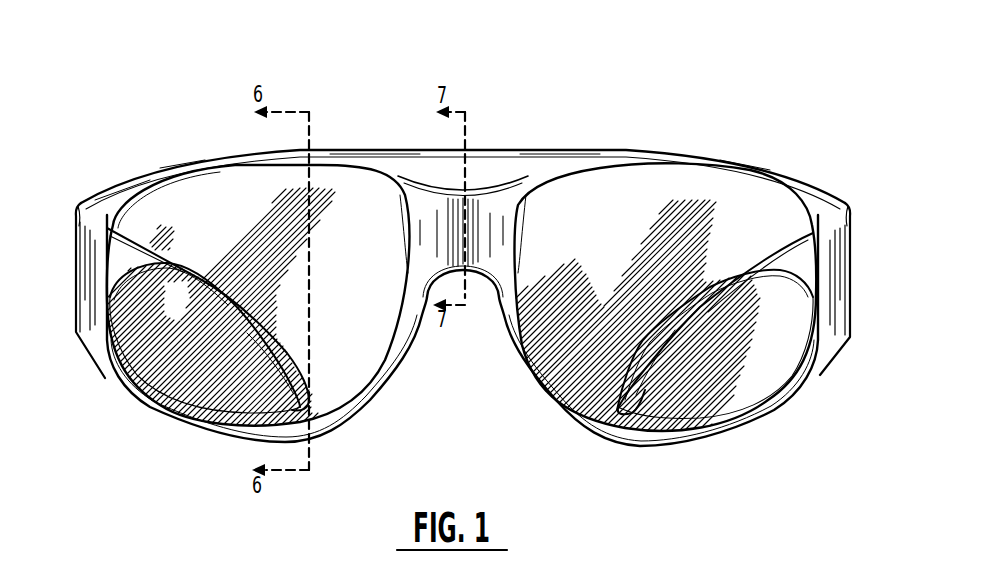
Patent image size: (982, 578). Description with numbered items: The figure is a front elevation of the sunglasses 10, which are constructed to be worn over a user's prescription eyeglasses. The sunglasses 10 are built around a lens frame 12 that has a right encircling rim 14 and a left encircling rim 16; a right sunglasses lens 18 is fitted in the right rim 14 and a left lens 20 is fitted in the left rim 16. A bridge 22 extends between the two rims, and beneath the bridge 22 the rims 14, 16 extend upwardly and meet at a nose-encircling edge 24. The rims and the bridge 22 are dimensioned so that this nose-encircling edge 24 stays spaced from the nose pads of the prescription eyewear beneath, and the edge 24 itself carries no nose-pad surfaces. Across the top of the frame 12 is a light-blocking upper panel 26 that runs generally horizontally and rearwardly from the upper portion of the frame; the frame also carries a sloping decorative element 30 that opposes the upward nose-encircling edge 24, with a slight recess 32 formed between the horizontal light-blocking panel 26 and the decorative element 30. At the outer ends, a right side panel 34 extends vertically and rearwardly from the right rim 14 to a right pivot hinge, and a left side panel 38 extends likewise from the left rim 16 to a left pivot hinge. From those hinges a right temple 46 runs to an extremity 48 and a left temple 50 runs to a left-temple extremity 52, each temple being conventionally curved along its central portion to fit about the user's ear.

The sunglasses 10 is at (615, 88).
The lens frame 12 is at (857, 245).
The right encircling rim 14 is at (133, 392).
The left encircling rim 16 is at (781, 393).
The right sunglasses lens 18 is at (272, 270).
The left lens 20 is at (675, 271).
The bridge 22 is at (505, 212).
The nose-encircling edge 24 is at (494, 282).
The light-blocking upper panel 26 is at (380, 148).
The sloping decorative element 30 is at (486, 188).
The recess 32 is at (415, 162).
The right side panel 34 is at (64, 265).
The left side panel 38 is at (857, 265).
The right temple 46 is at (135, 252).
The extremity 48 is at (283, 402).
The left temple 50 is at (756, 256).
The left-temple extremity 52 is at (620, 412).